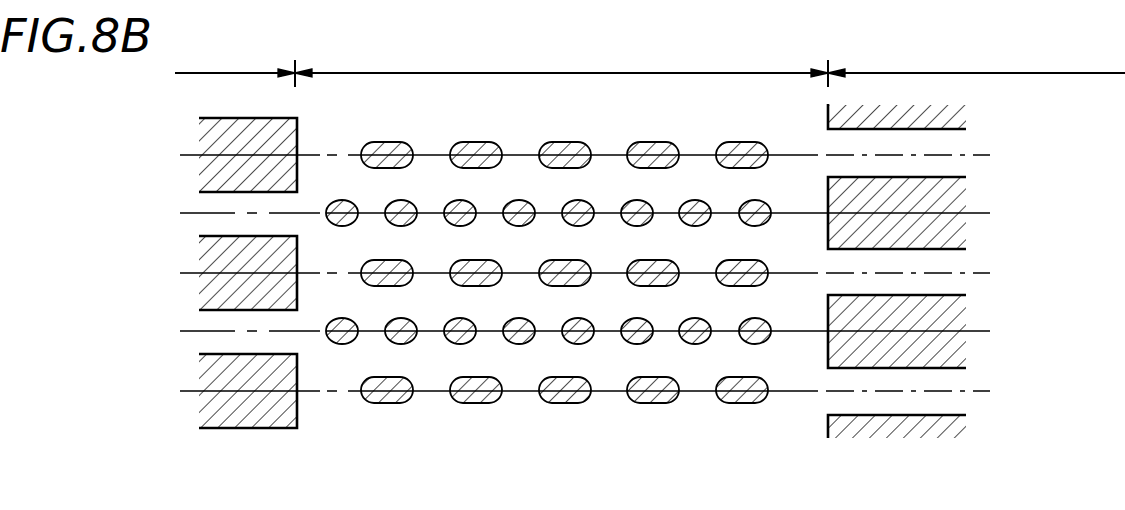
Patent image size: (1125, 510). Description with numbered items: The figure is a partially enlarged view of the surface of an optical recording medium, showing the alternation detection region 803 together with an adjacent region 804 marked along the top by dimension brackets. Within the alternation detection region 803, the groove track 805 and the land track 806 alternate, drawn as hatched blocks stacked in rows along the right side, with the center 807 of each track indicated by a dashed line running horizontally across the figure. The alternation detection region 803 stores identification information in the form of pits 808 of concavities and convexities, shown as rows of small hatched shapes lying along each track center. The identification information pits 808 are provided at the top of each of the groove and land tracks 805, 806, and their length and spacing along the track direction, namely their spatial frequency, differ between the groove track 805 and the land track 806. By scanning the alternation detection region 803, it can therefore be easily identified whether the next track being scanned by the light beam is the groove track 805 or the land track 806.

The alternation detection region 803 is at (501, 59).
The core region 804 is at (976, 58).
The groove track 805 is at (1045, 425).
The land track 806 is at (1040, 378).
The center of the track 807 is at (790, 393).
The identification information pits 808 is at (390, 403).